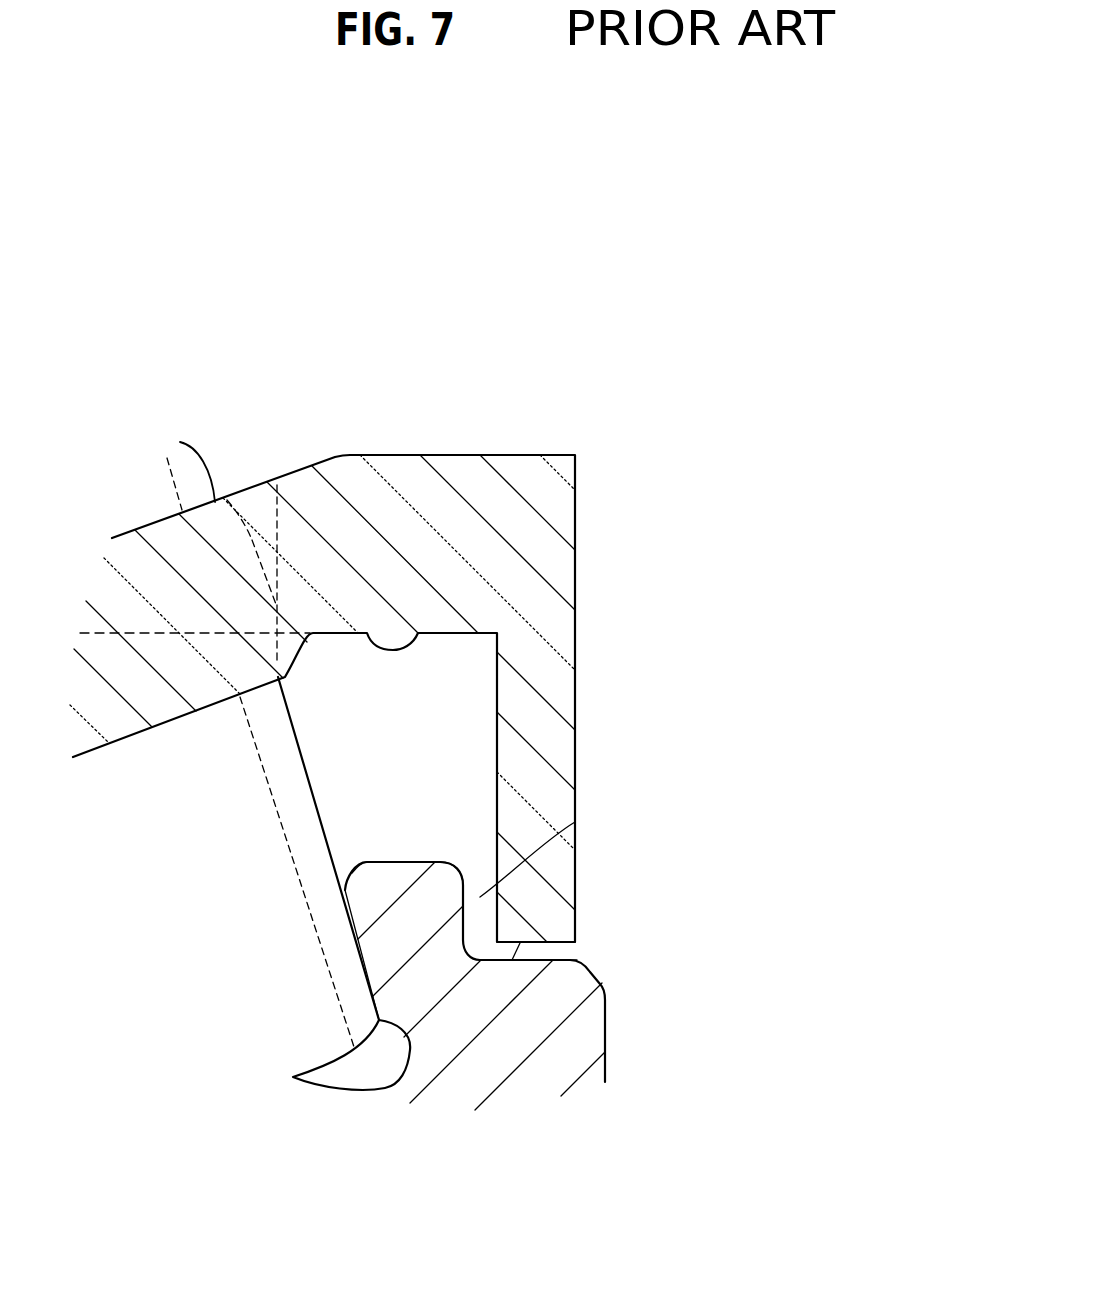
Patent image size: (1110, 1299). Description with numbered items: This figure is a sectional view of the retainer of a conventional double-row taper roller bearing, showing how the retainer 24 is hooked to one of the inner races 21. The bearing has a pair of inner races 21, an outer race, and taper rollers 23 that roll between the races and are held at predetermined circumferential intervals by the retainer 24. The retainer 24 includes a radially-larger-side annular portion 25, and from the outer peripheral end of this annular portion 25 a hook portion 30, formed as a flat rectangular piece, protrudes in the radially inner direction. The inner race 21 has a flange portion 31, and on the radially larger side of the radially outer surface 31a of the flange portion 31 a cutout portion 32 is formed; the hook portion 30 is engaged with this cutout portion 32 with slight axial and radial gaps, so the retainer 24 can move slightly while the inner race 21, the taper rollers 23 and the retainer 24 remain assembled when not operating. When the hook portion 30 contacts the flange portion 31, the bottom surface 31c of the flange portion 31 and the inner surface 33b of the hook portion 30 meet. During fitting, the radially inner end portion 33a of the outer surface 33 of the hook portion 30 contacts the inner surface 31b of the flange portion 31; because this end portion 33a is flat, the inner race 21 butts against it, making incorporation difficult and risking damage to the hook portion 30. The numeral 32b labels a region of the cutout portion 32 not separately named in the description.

The inner race 21 is at (607, 1025).
The taper roller 23 is at (292, 1018).
The retainer 24 is at (327, 637).
The radially-larger-side annular portion 25 is at (402, 475).
The hook portion 30 is at (616, 791).
The flange portion 31 is at (451, 956).
The radially outer surface 31a is at (393, 860).
The inner surface 31b is at (353, 931).
The bottom surface 31c is at (578, 946).
The cutout portion 32 is at (578, 863).
The inner portion of seal 32b is at (578, 841).
The outer surface 33 is at (664, 791).
The radially inner end portion 33a is at (576, 865).
The inner surface 33b is at (512, 960).